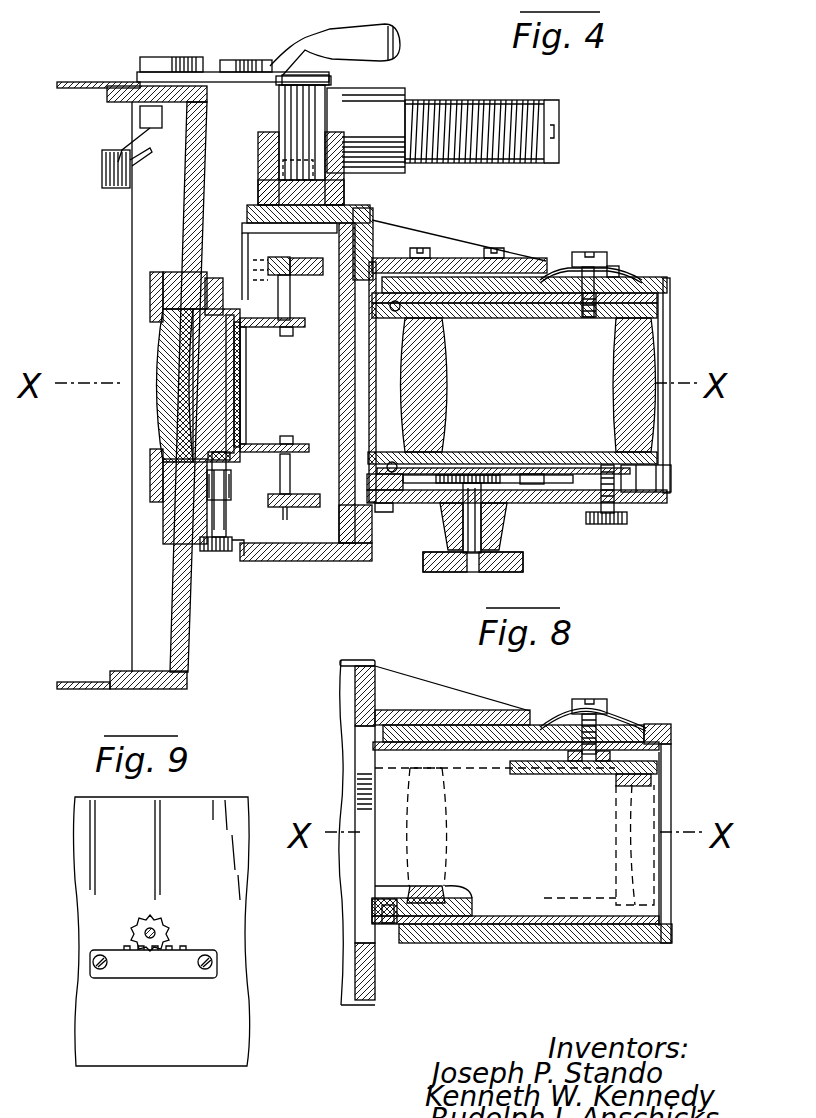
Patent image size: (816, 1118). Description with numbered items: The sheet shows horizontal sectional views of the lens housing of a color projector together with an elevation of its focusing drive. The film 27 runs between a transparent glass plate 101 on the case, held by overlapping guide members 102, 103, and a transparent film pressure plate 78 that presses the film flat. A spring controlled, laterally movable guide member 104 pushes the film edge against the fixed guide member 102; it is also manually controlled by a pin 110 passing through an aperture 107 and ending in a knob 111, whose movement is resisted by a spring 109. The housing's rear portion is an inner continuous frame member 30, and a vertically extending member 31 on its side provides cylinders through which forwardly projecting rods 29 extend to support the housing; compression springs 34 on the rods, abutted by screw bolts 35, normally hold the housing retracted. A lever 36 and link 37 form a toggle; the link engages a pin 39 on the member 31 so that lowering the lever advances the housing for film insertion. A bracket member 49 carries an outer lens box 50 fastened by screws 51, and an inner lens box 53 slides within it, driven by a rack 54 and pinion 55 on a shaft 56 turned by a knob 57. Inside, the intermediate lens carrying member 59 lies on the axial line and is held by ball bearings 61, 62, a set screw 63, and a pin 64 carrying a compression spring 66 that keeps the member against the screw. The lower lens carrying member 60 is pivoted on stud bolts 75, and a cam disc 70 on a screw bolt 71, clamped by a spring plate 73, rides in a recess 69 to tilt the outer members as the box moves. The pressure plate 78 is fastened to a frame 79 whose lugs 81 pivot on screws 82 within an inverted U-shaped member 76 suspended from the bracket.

In FIG. 4, the film 27 is at (247, 410).
In FIG. 4, the rods 29 is at (433, 100).
In FIG. 4, the inner continuous frame member 30 is at (350, 215).
In FIG. 4, the vertically extending member 31 is at (344, 189).
In FIG. 4, the compression springs 34 is at (500, 100).
In FIG. 4, the screw bolts 35 is at (557, 108).
In FIG. 4, the lever 36 is at (290, 56).
In FIG. 4, the link 37 is at (252, 84).
In FIG. 4, the pin 39 is at (197, 57).
In FIG. 4, the bracket member 49 is at (456, 257).
In FIG. 8, the bracket member 49 is at (446, 709).
In FIG. 4, the outer lens box 50 is at (551, 262).
In FIG. 8, the outer lens box 50 is at (486, 726).
In FIG. 4, the screws 51 is at (422, 248).
In FIG. 4, the inner lens box 53 is at (660, 288).
In FIG. 8, the inner lens box 53 is at (652, 726).
In FIG. 9, the inner lens box 53 is at (248, 806).
In FIG. 4, the rack 54 is at (516, 475).
In FIG. 9, the rack 54 is at (181, 978).
In FIG. 4, the pinion 55 is at (486, 475).
In FIG. 9, the pinion 55 is at (166, 929).
In FIG. 4, the shaft 56 is at (468, 527).
In FIG. 4, the knob 57 is at (524, 562).
In FIG. 4, the intermediate lens carrying member 59 is at (556, 320).
In FIG. 8, the lower lens carrying member 60 is at (456, 905).
In FIG. 4, the ball bearing 61 is at (391, 462).
In FIG. 4, the ball bearing 62 is at (393, 312).
In FIG. 4, the set screw 63 is at (616, 516).
In FIG. 4, the pin 64 is at (620, 276).
In FIG. 4, the compression spring 66 is at (587, 319).
In FIG. 8, the recess 69 is at (566, 765).
In FIG. 8, the cam disc 70 is at (598, 765).
In FIG. 4, the screw bolt 71 is at (590, 252).
In FIG. 8, the screw bolt 71 is at (594, 699).
In FIG. 4, the spring plate 73 is at (612, 266).
In FIG. 8, the spring plate 73 is at (549, 723).
In FIG. 8, the stud bolts 75 is at (373, 908).
In FIG. 4, the inverted U-shaped member 76 is at (305, 258).
In FIG. 4, the transparent film pressure plate 78 is at (236, 363).
In FIG. 4, the frame 79 is at (242, 373).
In FIG. 4, the lugs 81 is at (292, 318).
In FIG. 4, the screws 82 is at (285, 334).
In FIG. 4, the transparent glass plate 101 is at (190, 357).
In FIG. 4, the guide member 102 is at (212, 278).
In FIG. 4, the guide member 103 is at (195, 500).
In FIG. 4, the laterally movable guide member 104 is at (228, 462).
In FIG. 4, the aperture 107 is at (233, 500).
In FIG. 4, the spring 109 is at (188, 524).
In FIG. 4, the pin 110 is at (210, 551).
In FIG. 4, the knob 111 is at (238, 560).